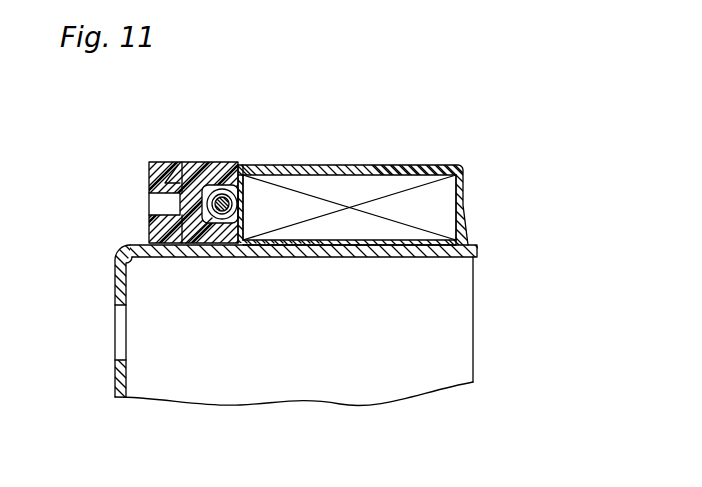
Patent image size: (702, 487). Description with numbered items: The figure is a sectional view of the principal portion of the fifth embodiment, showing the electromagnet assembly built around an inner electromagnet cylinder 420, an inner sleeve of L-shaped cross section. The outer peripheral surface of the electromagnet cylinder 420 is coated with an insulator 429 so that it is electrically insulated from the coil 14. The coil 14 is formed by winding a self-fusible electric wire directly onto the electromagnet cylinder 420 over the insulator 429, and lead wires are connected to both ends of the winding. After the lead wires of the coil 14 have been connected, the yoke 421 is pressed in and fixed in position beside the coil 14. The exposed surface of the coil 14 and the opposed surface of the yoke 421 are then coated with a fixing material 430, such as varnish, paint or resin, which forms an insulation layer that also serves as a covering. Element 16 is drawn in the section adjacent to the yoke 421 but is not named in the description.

The coil 14 is at (273, 197).
The fastening screw 16 is at (218, 178).
The inner electromagnet cylinder 420 is at (282, 252).
The yoke 421 is at (188, 173).
The insulator 429 is at (332, 256).
The fixing material 430 is at (347, 168).